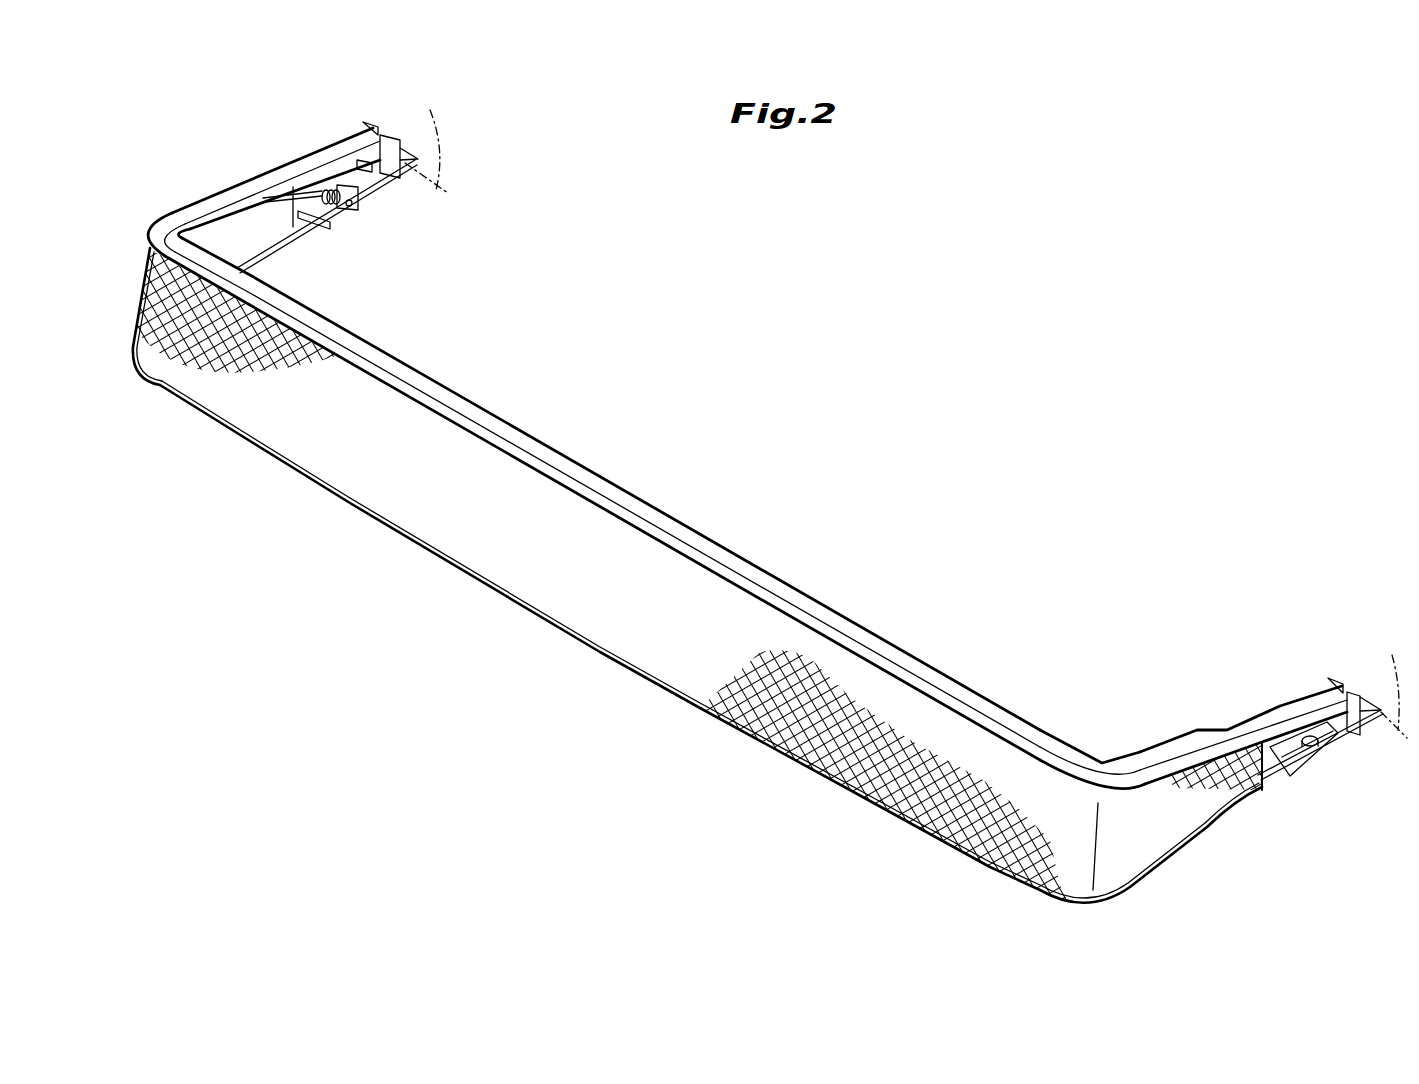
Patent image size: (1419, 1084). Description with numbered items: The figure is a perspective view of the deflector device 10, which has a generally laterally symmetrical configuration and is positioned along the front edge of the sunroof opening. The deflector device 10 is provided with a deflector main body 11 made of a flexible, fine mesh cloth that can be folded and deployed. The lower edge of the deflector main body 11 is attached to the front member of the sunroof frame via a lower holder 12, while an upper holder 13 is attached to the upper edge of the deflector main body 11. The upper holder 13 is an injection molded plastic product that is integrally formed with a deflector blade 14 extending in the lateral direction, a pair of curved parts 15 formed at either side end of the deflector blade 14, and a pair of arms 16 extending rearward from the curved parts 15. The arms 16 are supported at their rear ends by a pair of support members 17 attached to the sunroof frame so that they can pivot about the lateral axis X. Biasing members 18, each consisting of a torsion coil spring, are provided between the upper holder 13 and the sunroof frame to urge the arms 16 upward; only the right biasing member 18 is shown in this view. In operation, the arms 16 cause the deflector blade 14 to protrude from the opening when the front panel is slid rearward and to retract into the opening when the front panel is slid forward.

The deflector device 10 is at (807, 318).
The deflector main body 11 is at (515, 568).
The lower holder 12 is at (288, 468).
The upper holder 13 is at (532, 424).
The deflector blade 14 is at (652, 510).
The curved parts 15 is at (160, 220).
The arms 16 is at (233, 190).
The support members 17 is at (367, 180).
The biasing members 18 is at (332, 187).